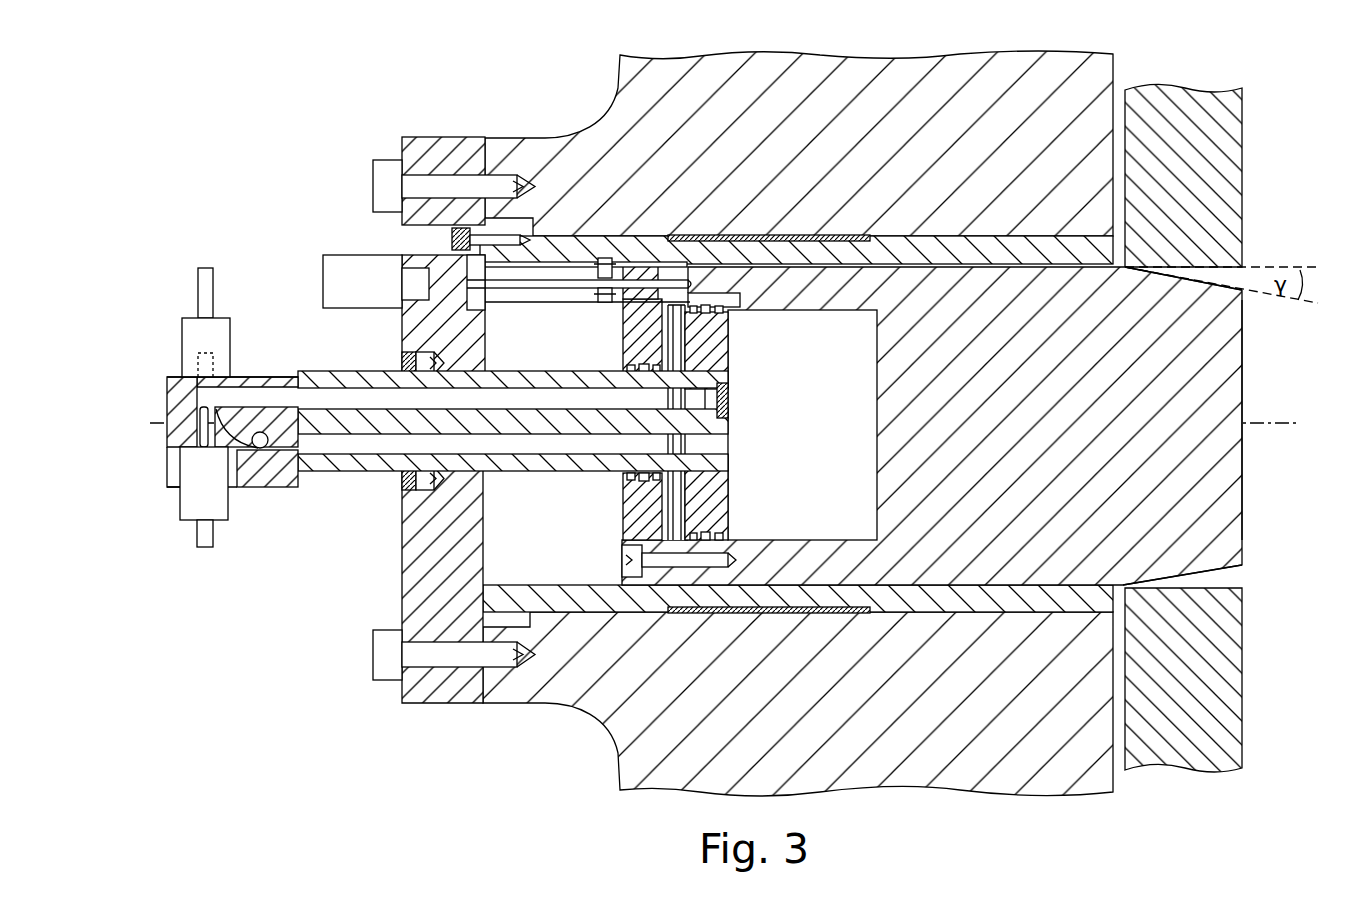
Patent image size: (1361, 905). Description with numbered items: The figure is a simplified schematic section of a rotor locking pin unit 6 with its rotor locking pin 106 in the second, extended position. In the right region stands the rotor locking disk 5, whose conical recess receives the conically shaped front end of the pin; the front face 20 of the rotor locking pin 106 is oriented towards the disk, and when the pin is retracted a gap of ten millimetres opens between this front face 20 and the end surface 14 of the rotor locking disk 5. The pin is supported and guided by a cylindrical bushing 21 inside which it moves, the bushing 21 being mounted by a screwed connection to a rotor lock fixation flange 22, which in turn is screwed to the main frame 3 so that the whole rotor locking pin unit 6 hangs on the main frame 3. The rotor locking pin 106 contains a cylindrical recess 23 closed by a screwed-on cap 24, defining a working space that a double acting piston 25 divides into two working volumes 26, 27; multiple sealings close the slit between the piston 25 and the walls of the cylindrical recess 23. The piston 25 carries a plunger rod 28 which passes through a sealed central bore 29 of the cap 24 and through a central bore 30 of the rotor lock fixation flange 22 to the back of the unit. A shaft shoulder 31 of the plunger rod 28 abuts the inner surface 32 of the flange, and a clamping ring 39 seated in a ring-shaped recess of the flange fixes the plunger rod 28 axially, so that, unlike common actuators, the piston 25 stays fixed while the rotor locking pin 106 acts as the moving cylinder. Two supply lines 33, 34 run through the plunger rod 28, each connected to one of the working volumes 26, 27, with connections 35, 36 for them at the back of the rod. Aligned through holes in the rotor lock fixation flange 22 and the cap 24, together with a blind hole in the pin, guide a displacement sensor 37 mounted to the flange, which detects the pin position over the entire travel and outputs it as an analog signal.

The main frame 3 is at (800, 95).
The rotor locking disk 5 is at (1245, 205).
The rotor locking pin unit 6 is at (172, 233).
The end surface of the rotor locking disk 14 is at (1127, 170).
The front face of the rotor locking pin 20 is at (1237, 365).
The bushing 21 is at (1043, 262).
The rotor lock fixation flange 22 is at (437, 137).
The cylindrical recess 23 is at (885, 437).
The cap 24 is at (637, 333).
The piston 25 is at (727, 330).
The first working volume 26 is at (818, 406).
The second working volume 27 is at (725, 505).
The plunger rod 28 is at (370, 435).
The central bore of the cap 29 is at (640, 367).
The central bore of the rotor lock fixation flange 30 is at (415, 492).
The shaft shoulder 31 is at (500, 470).
The inner surface of the rotor lock fixation flange 32 is at (485, 335).
The first supply line 33 is at (283, 462).
The second supply line 34 is at (300, 395).
The first connection 35 is at (197, 330).
The second connection 36 is at (190, 505).
The displacement sensor 37 is at (357, 288).
The clamping ring 39 is at (400, 365).
The rotor locking pin 106 is at (1232, 398).